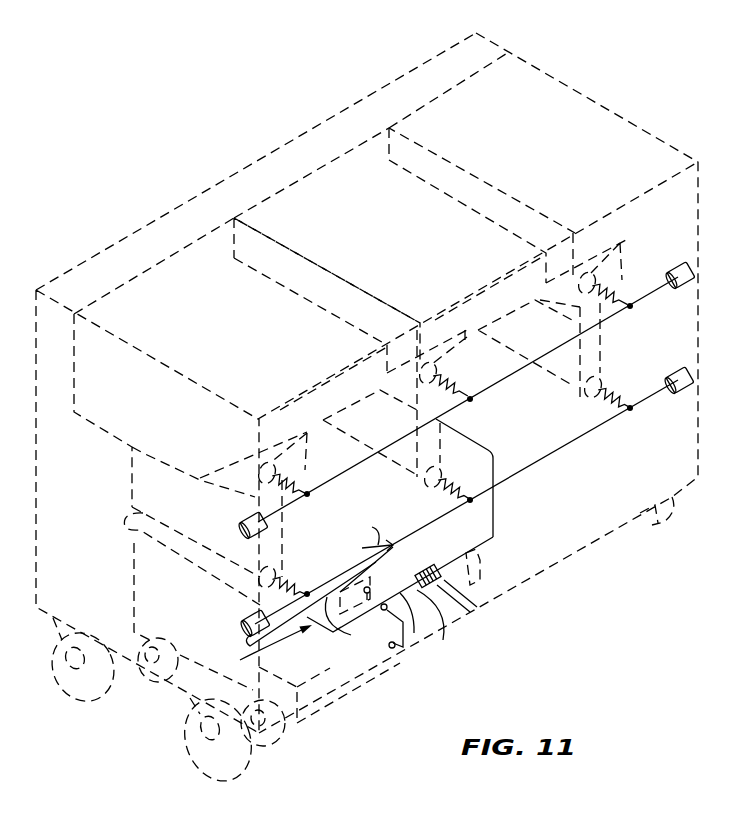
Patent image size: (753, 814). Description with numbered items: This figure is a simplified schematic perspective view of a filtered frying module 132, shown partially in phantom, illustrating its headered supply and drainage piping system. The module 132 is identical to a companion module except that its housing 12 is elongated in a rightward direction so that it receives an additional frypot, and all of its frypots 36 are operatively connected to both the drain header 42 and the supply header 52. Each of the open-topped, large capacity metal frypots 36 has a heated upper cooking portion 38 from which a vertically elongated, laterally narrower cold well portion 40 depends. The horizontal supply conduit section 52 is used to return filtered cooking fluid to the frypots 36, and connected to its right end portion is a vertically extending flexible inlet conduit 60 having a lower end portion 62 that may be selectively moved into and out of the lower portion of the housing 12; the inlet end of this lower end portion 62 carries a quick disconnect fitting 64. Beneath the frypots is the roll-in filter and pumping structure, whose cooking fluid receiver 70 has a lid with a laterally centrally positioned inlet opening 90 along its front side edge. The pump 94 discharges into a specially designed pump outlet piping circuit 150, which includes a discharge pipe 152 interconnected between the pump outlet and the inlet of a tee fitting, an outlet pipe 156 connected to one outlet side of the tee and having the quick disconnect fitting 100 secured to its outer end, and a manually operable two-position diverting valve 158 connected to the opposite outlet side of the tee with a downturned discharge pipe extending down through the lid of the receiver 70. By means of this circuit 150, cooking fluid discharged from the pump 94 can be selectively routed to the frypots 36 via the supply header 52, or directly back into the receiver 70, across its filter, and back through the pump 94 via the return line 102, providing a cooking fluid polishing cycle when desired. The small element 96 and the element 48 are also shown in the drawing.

The housing 12 is at (214, 189).
The module 132 is at (610, 101).
The frypots 36 is at (232, 344).
The upper cooking portion 38 is at (692, 372).
The cold well portion 40 is at (692, 268).
The drain header 42 is at (556, 450).
The horizontal supply conduit section 52 is at (488, 392).
The flexible inlet conduit 60 is at (492, 453).
The lower end portion 62 is at (494, 529).
The cooking fluid receiver 70 is at (133, 600).
The inlet opening 90 is at (369, 539).
The pin 48 is at (373, 544).
The discharge pipe 152 is at (335, 577).
The pump 94 is at (361, 640).
The knob 96 is at (444, 573).
The quick disconnect fitting 64 is at (480, 613).
The quick disconnect fitting 100 is at (476, 620).
The return line 102 is at (407, 650).
The outlet pipe 156 is at (443, 640).
The pump outlet piping circuit 150 is at (262, 651).
The two-position diverting valve 158 is at (242, 636).